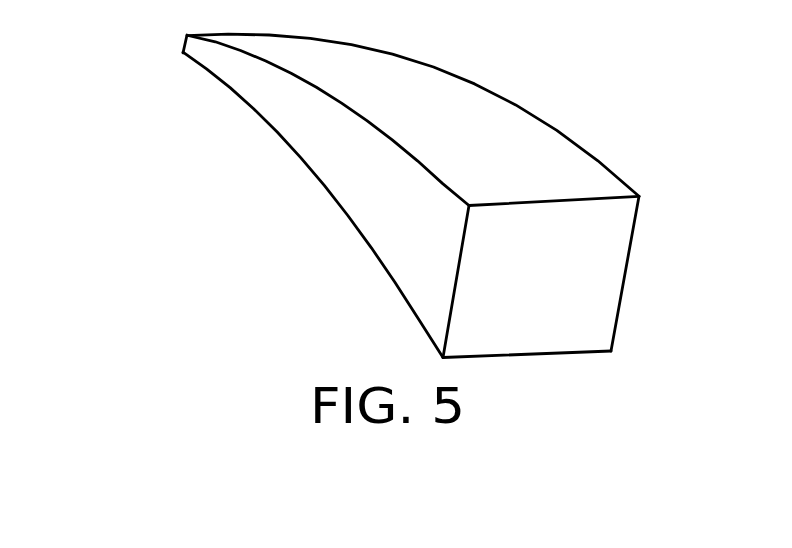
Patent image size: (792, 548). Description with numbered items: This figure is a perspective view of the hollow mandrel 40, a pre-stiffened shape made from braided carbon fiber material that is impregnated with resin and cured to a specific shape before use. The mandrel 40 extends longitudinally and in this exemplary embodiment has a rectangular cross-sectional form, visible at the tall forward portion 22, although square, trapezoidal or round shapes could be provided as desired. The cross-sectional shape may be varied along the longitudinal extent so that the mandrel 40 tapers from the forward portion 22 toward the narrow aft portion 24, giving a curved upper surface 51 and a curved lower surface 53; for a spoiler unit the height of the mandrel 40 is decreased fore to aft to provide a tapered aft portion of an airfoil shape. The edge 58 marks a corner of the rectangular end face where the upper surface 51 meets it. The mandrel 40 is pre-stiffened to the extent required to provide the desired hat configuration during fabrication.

The aft portion 24 is at (182, 52).
The curved upper surface 51 is at (523, 128).
The lower surface 53 is at (358, 236).
The top edge of end face 58 is at (640, 196).
The forward portion 22 is at (588, 352).
The hollow mandrel 40 is at (262, 175).